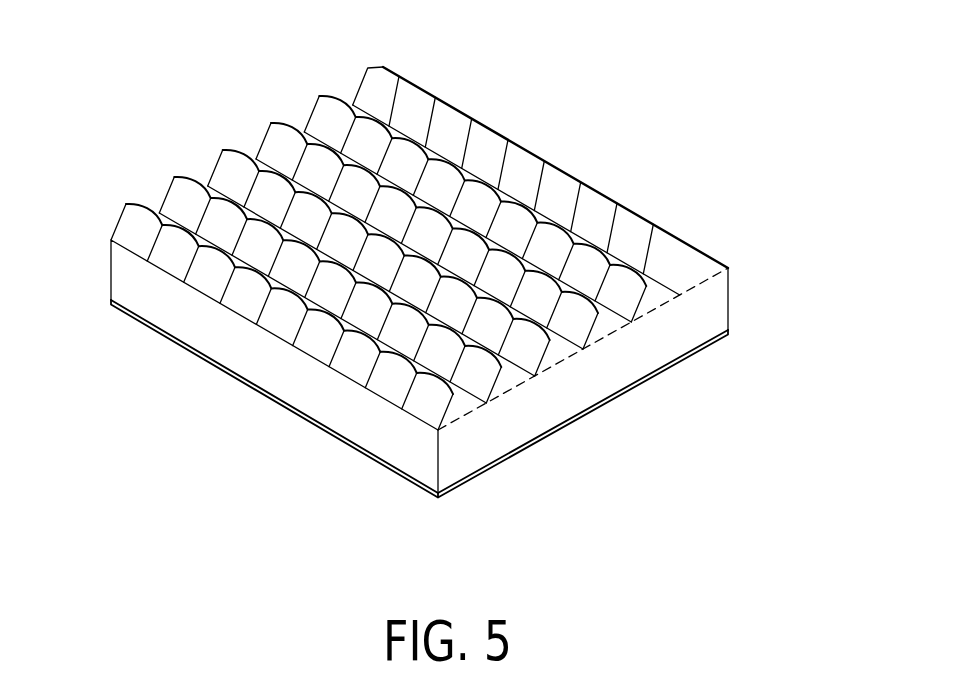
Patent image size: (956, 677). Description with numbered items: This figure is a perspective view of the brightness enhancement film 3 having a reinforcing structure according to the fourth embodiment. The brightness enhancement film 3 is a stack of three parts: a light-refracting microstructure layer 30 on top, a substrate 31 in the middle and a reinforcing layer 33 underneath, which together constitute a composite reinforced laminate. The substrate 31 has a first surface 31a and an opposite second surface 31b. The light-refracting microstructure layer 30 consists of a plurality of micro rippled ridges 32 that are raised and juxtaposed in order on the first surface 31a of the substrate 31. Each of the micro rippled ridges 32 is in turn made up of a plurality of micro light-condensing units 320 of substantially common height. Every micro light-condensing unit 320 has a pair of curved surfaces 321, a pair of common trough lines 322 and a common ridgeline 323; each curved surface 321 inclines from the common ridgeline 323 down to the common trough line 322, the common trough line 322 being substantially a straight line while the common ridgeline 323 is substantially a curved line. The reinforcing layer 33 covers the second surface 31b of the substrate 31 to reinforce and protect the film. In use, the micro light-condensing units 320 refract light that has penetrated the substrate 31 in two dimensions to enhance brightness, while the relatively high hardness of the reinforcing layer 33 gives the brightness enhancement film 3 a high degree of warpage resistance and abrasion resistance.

The brightness enhancement film 3 is at (212, 381).
The light-refracting microstructure layer 30 is at (563, 177).
The substrate 31 is at (715, 308).
The first surface 31a is at (731, 293).
The second surface 31b is at (731, 333).
The micro rippled ridges 32 is at (615, 280).
The micro light-condensing units 320 is at (470, 410).
The curved surfaces 321 is at (433, 405).
The common trough lines 322 is at (465, 410).
The common ridgeline 323 is at (437, 388).
The reinforcing layer 33 is at (629, 388).